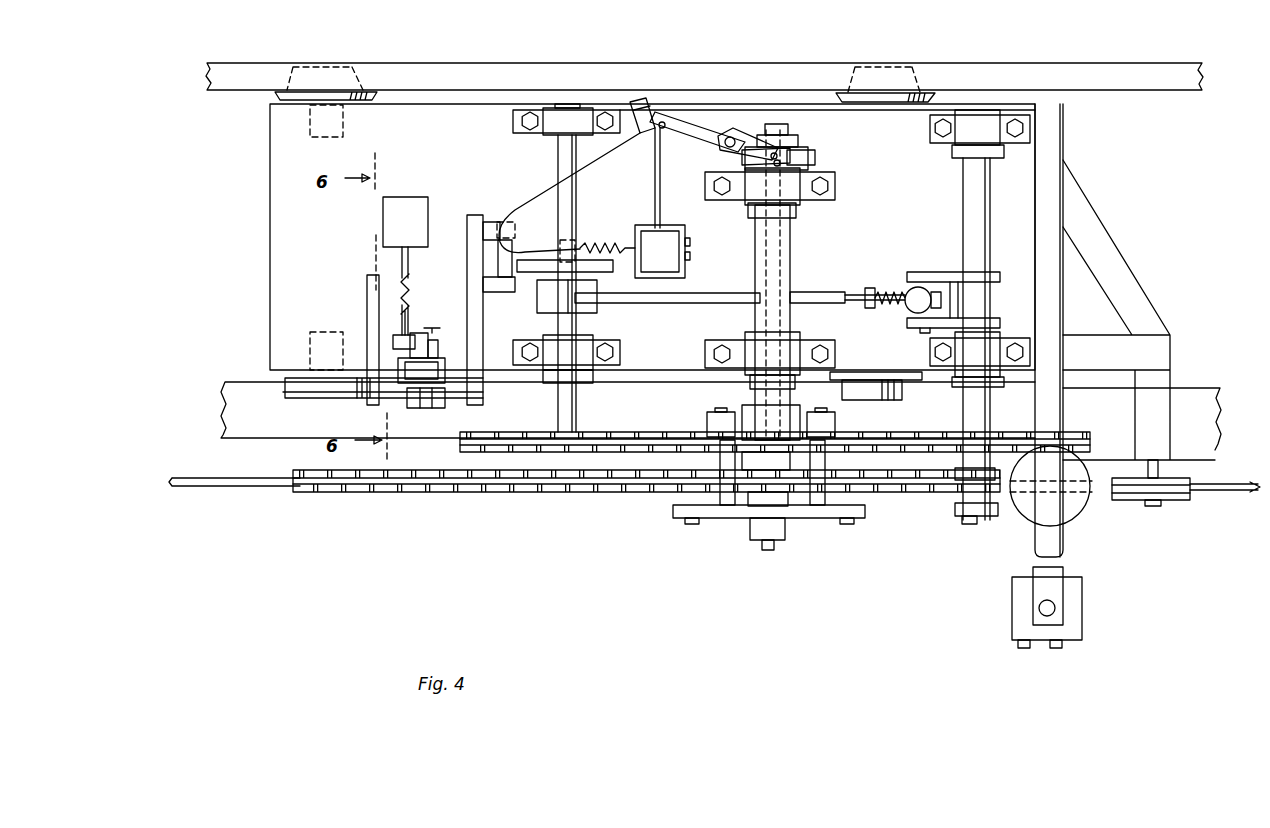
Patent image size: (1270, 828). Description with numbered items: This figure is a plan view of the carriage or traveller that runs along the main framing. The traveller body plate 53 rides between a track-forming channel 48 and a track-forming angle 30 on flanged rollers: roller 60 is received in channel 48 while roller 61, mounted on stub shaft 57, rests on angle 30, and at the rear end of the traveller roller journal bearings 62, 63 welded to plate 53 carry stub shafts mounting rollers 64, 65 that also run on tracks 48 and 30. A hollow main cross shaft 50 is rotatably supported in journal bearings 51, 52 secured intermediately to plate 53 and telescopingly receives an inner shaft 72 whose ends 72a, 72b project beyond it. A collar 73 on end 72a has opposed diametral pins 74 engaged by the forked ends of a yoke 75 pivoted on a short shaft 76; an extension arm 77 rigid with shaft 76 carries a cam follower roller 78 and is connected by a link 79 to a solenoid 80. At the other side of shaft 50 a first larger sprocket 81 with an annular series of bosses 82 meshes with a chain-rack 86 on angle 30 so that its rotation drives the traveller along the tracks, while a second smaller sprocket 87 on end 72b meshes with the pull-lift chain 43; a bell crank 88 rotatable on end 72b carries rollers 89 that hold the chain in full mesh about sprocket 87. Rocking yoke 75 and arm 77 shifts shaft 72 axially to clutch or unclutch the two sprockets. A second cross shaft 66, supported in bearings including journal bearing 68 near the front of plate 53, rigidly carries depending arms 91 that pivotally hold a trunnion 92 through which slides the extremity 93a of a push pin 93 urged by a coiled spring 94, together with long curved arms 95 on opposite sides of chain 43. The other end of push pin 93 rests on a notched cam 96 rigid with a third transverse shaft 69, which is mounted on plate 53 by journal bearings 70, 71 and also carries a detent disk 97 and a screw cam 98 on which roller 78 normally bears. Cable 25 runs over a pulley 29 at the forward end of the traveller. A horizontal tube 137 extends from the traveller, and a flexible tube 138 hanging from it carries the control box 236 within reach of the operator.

The track-forming channel 48 is at (1160, 92).
The roller 64 is at (322, 66).
The flanged roller 60 is at (905, 66).
The roller journal bearing 62 is at (312, 128).
The roller journal bearing 63 is at (312, 340).
The traveller body plate 53 is at (286, 236).
The track-forming angle 30 is at (230, 414).
The roller 65 is at (305, 400).
The flanged roller 61 is at (905, 398).
The journal bearing 70 is at (540, 133).
The third transverse shaft 69 is at (578, 408).
The detent disk 97 is at (535, 273).
The notched cam 96 is at (540, 306).
The journal bearing 71 is at (600, 345).
The cam follower roller 78 is at (641, 100).
The extension arm 77 is at (684, 124).
The short shaft 76 is at (728, 136).
The yoke 75 is at (748, 142).
The link 79 is at (655, 204).
The solenoid 80 is at (670, 260).
The screw cam 98 is at (521, 204).
The main cross shaft 50 is at (792, 232).
The inner shaft 72 is at (792, 266).
The projecting end of inner shaft 72a is at (790, 127).
The collar 73 is at (800, 156).
The diametral pins 74 is at (770, 166).
The journal bearing 51 is at (748, 208).
The journal bearing 52 is at (748, 338).
The push pin 93 is at (720, 292).
The coiled spring 94 is at (867, 290).
The extremity of push pin 93a is at (885, 292).
The trunnion 92 is at (921, 292).
The depending arms 91 is at (986, 303).
The second cross shaft 66 is at (965, 178).
The stub shaft 57 is at (966, 146).
The journal bearing 68 is at (990, 346).
The bosses 82 is at (708, 420).
The first larger sprocket 81 is at (676, 434).
The chain-rack 86 is at (462, 441).
The pull-lift chain 43 is at (612, 494).
The rollers 89 is at (695, 482).
The second smaller sprocket 87 is at (760, 490).
The bell crank 88 is at (826, 519).
The projecting end of inner shaft 72b is at (770, 550).
The curved arms 95 is at (977, 518).
The pulley 29 is at (1183, 502).
The cable 25 is at (1230, 493).
The horizontal tube 137 is at (1062, 204).
The flexible tube 138 is at (1055, 605).
The control box 236 is at (1104, 617).